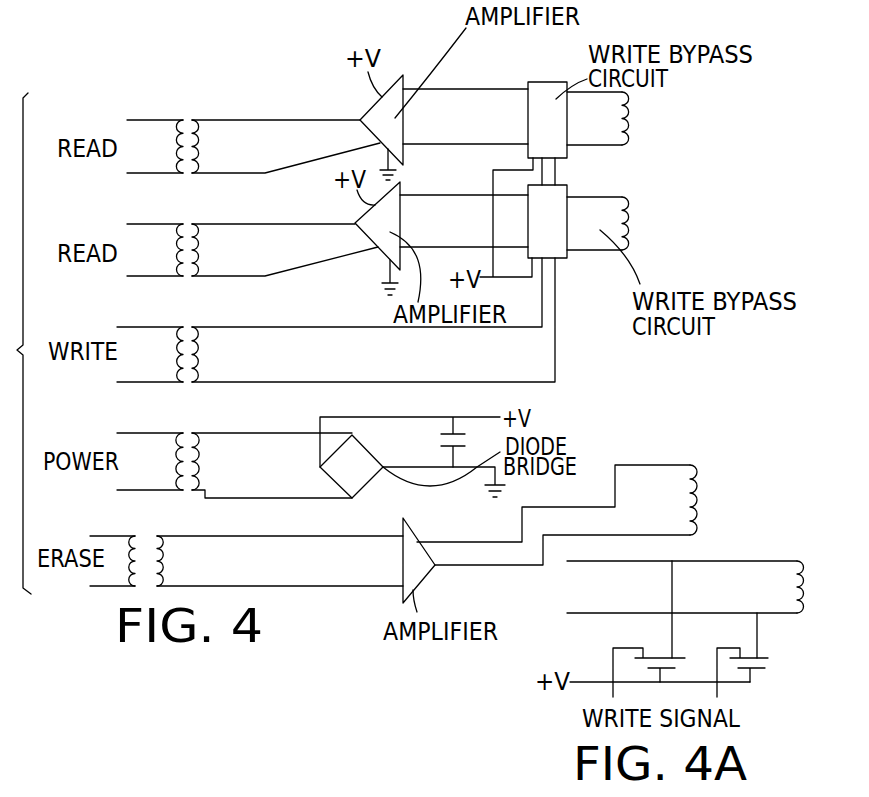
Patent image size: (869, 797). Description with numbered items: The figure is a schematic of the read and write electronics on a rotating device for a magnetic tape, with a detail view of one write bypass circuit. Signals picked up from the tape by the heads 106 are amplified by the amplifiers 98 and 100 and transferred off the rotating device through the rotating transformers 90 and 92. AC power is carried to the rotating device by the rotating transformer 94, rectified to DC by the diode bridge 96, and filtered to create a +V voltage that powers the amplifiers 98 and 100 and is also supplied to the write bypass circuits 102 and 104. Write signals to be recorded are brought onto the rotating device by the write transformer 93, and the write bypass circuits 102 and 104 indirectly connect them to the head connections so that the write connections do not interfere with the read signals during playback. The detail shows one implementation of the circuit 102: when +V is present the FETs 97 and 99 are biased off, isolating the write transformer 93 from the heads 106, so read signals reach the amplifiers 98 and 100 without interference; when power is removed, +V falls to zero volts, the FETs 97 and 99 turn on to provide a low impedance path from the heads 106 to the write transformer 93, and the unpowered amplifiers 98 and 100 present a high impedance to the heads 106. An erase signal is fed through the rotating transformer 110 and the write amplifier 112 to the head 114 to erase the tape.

In FIG. 4, the rotating transformer 90 is at (184, 121).
In FIG. 4, the rotating transformer 92 is at (184, 225).
In FIG. 4, the write transformer 93 is at (184, 328).
In FIG. 4, the rotating transformer 94 is at (184, 434).
In FIG. 4, the diode bridge 96 is at (368, 467).
In FIG. 4A, the FET 97 is at (658, 656).
In FIG. 4, the amplifier 98 is at (405, 80).
In FIG. 4A, the FET 99 is at (762, 656).
In FIG. 4, the amplifier 100 is at (403, 184).
In FIG. 4, the write bypass circuit 102 is at (546, 82).
In FIG. 4A, the write bypass circuit 102 is at (790, 673).
In FIG. 4, the write bypass circuit 104 is at (567, 260).
In FIG. 4, the heads 106 is at (630, 133).
In FIG. 4A, the heads 106 is at (805, 582).
In FIG. 4, the rotating transformer 110 is at (146, 540).
In FIG. 4, the write amplifier 112 is at (412, 533).
In FIG. 4, the head 114 is at (701, 470).